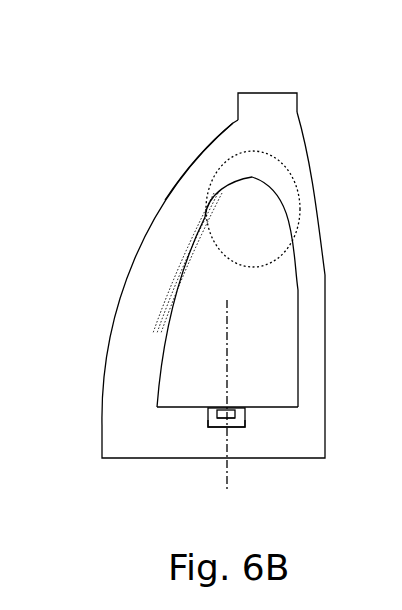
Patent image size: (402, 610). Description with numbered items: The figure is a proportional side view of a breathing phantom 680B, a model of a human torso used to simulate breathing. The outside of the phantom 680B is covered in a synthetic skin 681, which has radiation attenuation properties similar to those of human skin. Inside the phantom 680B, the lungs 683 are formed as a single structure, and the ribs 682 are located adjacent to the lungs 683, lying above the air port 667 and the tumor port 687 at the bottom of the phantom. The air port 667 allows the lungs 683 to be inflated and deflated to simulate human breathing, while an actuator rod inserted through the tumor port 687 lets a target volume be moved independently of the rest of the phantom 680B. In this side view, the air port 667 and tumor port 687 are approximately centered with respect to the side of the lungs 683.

The phantom 680B is at (255, 92).
The synthetic skin 681 is at (210, 148).
The ribs 682 is at (188, 233).
The lungs 683 is at (208, 318).
The tumor port 687 is at (212, 425).
The air port 667 is at (237, 418).